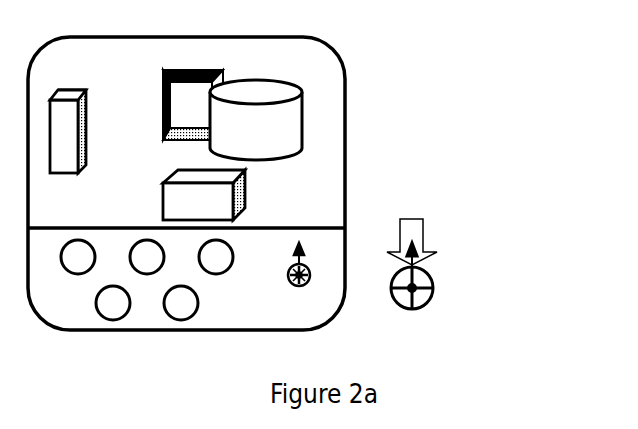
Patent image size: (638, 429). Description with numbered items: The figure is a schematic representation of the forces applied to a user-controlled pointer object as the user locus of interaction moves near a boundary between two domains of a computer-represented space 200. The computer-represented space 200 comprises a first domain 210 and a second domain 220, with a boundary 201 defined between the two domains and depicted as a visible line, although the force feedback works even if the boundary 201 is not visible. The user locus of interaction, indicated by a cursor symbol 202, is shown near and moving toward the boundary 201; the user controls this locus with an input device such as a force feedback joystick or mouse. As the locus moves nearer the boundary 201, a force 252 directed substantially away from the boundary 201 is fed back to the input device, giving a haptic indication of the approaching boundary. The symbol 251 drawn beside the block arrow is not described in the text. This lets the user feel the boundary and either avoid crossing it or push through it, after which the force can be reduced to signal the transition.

The computer-represented space 200 is at (259, 183).
The first domain 210 is at (261, 145).
The boundary 201 is at (261, 205).
The second domain 220 is at (256, 233).
The cursor symbol 202 is at (397, 298).
The force 252 is at (475, 240).
The joystick control symbol 251 is at (482, 281).